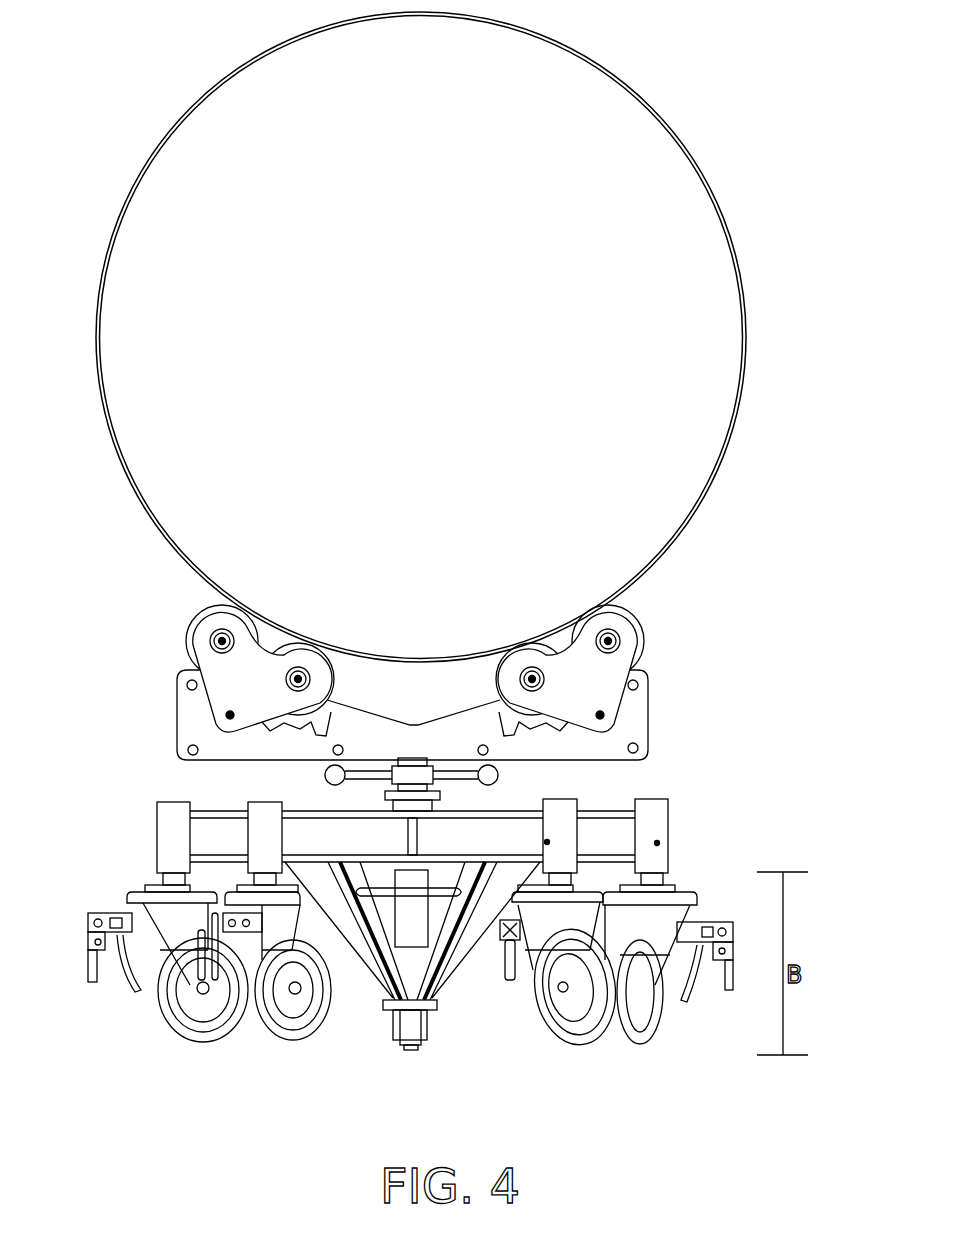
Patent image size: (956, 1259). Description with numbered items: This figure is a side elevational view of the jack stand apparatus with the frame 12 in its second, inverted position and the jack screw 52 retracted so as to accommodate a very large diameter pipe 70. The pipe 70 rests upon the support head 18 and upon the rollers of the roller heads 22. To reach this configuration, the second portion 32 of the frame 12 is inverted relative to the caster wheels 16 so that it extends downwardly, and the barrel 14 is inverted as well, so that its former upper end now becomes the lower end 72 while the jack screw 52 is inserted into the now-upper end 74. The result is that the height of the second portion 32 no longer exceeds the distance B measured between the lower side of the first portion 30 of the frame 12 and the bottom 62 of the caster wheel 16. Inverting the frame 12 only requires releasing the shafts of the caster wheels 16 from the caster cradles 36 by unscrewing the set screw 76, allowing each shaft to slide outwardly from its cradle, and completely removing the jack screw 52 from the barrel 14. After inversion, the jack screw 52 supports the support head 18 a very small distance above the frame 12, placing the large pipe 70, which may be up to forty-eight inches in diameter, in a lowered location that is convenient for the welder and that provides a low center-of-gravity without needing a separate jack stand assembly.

The large diameter pipe 70 is at (597, 53).
The roller heads 22 is at (203, 664).
The support head 18 is at (640, 718).
The frame 12 is at (607, 823).
The jack screw 52 is at (386, 786).
The upper end 74 is at (441, 796).
The first portion 30 is at (216, 832).
The set screw 76 is at (656, 820).
The caster cradles 36 is at (672, 847).
The barrel 14 is at (428, 918).
The second portion 32 is at (358, 964).
The lower end 72 is at (440, 1006).
The bottom 62 is at (421, 1049).
The caster wheels 16 is at (150, 905).